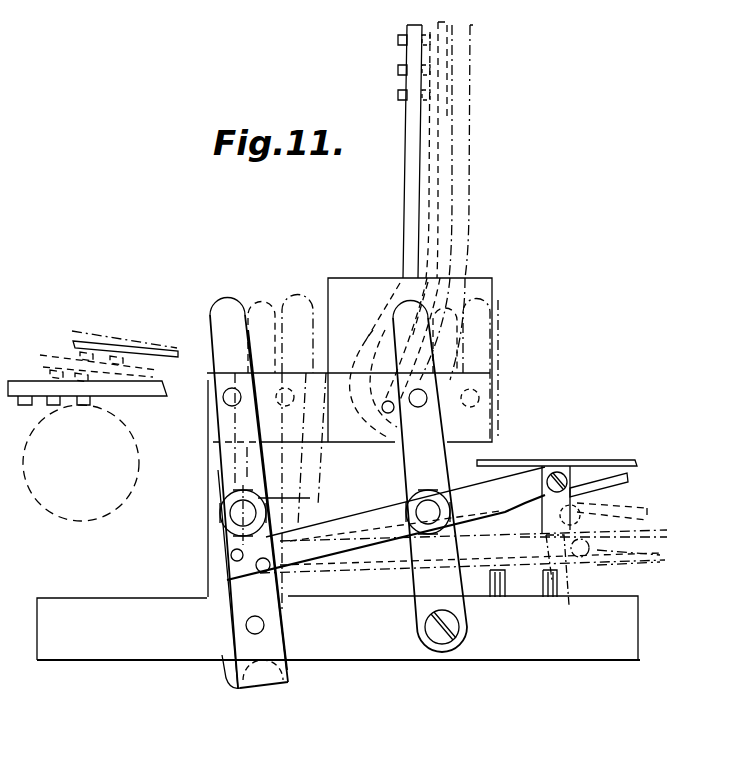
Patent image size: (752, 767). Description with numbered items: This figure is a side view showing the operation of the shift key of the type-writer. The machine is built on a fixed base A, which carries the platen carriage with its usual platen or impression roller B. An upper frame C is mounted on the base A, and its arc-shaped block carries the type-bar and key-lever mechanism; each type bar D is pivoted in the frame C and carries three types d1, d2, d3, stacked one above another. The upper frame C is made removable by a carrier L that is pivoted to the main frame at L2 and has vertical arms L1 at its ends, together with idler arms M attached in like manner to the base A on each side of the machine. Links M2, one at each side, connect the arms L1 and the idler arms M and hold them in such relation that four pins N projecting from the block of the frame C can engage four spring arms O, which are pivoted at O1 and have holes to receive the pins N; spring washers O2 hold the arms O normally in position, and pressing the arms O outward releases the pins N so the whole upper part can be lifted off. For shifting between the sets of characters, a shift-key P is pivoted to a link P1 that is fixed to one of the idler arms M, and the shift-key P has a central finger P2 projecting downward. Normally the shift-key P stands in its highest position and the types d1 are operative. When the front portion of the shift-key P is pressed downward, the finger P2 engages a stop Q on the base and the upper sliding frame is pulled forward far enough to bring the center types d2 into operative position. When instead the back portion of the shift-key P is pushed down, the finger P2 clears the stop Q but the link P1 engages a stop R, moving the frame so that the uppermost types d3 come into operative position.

The type d1 is at (398, 95).
The type d2 is at (398, 70).
The type d3 is at (398, 40).
The type bar D is at (415, 212).
The upper frame C is at (495, 282).
The pins N is at (223, 397).
The platen or impression roller B is at (67, 500).
The spring arms O is at (408, 323).
The carrier L is at (273, 683).
The vertical arms L1 is at (267, 607).
The pivot L2 is at (258, 617).
The link P1 is at (227, 502).
The spring washers O2 is at (220, 513).
The pivot O1 is at (240, 522).
The links M2 is at (297, 522).
The idler arms M is at (433, 597).
The stop R is at (507, 592).
The fixed base A is at (338, 628).
The shift-key P is at (626, 460).
The central finger P2 is at (550, 463).
The stop Q is at (563, 573).